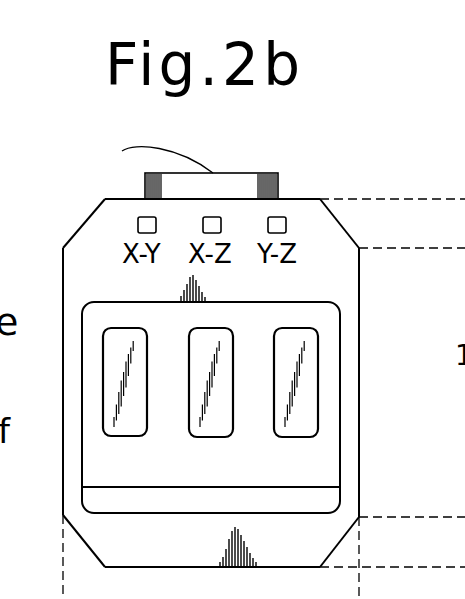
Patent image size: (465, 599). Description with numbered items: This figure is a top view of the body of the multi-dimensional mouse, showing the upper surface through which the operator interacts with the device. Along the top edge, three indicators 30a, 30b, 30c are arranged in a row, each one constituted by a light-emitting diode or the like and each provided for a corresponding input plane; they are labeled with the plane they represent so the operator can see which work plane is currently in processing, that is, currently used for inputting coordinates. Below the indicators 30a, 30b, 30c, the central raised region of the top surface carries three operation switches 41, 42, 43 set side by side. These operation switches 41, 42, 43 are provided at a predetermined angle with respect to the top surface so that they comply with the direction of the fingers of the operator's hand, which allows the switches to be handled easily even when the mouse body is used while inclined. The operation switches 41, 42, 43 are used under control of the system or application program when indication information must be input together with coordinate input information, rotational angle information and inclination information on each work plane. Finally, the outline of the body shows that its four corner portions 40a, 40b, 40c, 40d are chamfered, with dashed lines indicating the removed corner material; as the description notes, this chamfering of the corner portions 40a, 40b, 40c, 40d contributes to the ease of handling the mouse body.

The indicator 30a is at (138, 217).
The indicator 30b is at (285, 217).
The indicator 30c is at (223, 217).
The chamfered corner portion 40a is at (72, 235).
The chamfered corner portion 40b is at (350, 230).
The chamfered corner portion 40c is at (342, 540).
The chamfered corner portion 40d is at (87, 548).
The operation switch 41 is at (118, 434).
The operation switch 42 is at (210, 328).
The operation switch 43 is at (318, 388).